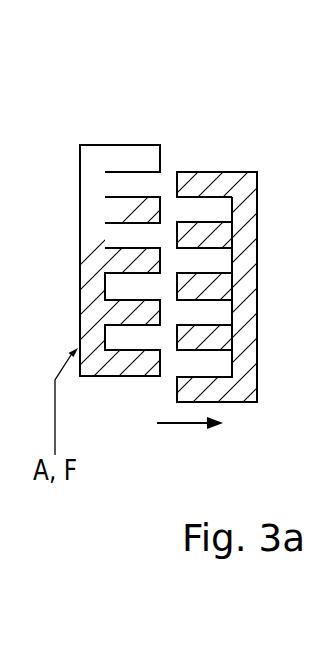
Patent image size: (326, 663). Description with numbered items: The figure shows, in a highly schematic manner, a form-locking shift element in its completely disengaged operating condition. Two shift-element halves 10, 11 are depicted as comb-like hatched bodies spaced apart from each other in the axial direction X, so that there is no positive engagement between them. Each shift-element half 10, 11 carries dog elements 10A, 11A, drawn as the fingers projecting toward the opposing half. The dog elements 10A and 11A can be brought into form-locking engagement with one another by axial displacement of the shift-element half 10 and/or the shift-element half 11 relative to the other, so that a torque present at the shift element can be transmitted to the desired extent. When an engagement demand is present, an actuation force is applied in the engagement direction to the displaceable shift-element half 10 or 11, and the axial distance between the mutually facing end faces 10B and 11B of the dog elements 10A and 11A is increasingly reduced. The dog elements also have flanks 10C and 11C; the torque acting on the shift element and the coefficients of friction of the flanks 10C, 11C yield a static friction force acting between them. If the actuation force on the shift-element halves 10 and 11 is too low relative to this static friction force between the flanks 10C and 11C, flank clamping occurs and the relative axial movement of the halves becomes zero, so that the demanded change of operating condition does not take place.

The shift-element half 10 is at (78, 132).
The dog element 10A is at (111, 157).
The end face 10B is at (158, 208).
The flank 10C is at (122, 248).
The shift-element half 11 is at (244, 163).
The dog element 11A is at (216, 176).
The end face 11B is at (177, 185).
The flank 11C is at (234, 262).
The axial direction X is at (159, 423).